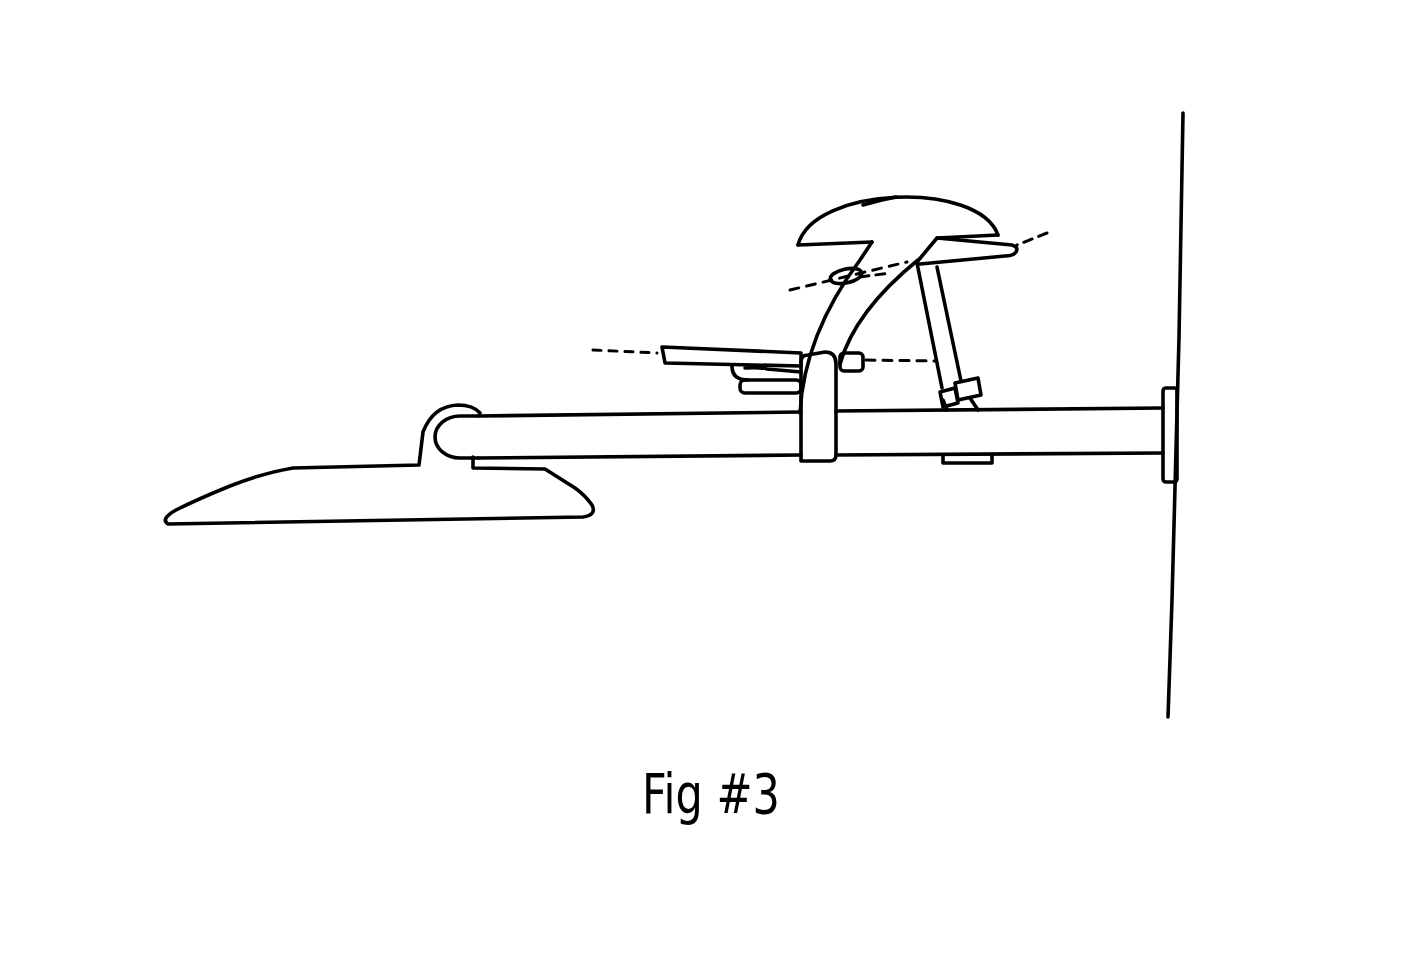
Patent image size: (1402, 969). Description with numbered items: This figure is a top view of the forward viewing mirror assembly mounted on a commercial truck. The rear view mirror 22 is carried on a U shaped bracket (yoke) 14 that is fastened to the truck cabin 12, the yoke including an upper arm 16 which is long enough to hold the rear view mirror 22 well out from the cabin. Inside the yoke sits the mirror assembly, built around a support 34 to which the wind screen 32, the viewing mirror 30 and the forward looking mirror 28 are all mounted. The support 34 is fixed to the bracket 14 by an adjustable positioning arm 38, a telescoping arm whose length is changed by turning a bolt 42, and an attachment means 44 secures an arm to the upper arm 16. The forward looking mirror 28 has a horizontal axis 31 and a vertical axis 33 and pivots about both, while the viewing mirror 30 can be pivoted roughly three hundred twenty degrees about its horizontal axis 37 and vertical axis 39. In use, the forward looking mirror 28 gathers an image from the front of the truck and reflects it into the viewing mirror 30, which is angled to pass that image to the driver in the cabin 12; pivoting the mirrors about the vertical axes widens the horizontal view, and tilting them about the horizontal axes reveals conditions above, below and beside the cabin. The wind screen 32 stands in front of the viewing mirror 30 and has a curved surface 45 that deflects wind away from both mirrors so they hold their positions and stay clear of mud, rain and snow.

The truck cabin 12 is at (1190, 352).
The U shaped bracket (yoke) 14 is at (1105, 444).
The upper arm 16 is at (704, 434).
The rear view mirror 22 is at (220, 504).
The forward looking mirror 28 is at (657, 340).
The viewing mirror 30 is at (995, 249).
The horizontal axis 31 is at (622, 347).
The wind screen 32 is at (932, 209).
The vertical axis 33 is at (737, 354).
The support 34 is at (840, 295).
The horizontal axis 37 is at (1039, 225).
The positioning arm 38 is at (947, 354).
The vertical axis 39 is at (909, 254).
The bolt 42 is at (940, 402).
The attachment means 44 is at (804, 420).
The curved surface 45 is at (855, 197).